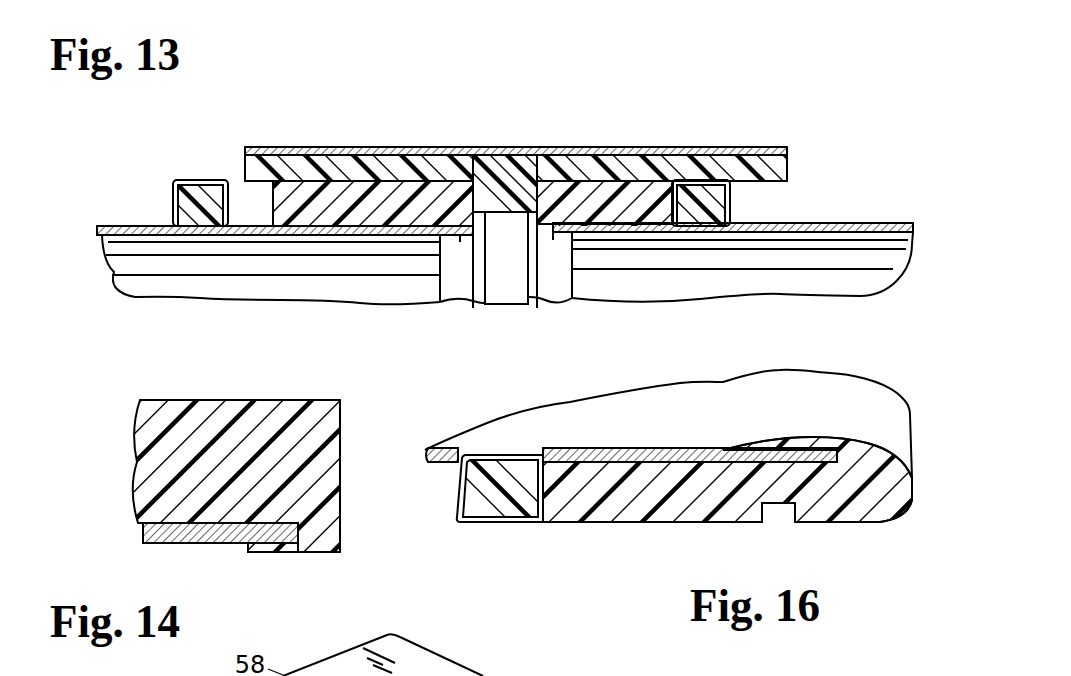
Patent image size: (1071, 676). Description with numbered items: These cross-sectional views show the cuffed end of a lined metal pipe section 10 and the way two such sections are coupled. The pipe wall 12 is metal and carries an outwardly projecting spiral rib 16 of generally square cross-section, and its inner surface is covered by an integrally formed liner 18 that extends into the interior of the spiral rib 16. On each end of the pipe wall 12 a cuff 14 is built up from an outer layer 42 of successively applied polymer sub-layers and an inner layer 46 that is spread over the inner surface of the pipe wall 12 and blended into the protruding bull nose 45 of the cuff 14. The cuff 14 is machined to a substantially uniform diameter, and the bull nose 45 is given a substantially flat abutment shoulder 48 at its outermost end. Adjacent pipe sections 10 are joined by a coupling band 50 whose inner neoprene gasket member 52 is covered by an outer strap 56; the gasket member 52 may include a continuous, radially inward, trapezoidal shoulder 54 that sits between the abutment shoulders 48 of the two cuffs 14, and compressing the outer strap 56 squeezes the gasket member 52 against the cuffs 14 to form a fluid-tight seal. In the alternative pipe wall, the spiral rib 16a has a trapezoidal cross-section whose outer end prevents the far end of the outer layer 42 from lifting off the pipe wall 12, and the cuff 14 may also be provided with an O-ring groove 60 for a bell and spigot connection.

In FIG. 13, the pipe section 10 is at (158, 175).
In FIG. 13, the pipe wall 12 is at (126, 224).
In FIG. 14, the pipe wall 12 is at (143, 527).
In FIG. 16, the pipe wall 12 is at (450, 455).
In FIG. 13, the cuff 14 is at (400, 147).
In FIG. 13, the spiral rib 16 is at (205, 177).
In FIG. 16, the spiral rib 16a is at (497, 528).
In FIG. 13, the liner 18 is at (195, 235).
In FIG. 14, the liner 18 is at (184, 545).
In FIG. 16, the liner 18 is at (612, 450).
In FIG. 13, the outer layer 42 is at (452, 185).
In FIG. 14, the outer layer 42 is at (270, 414).
In FIG. 16, the outer layer 42 is at (575, 522).
In FIG. 14, the bull nose 45 is at (350, 554).
In FIG. 16, the bull nose 45 is at (915, 512).
In FIG. 13, the inner layer 46 is at (457, 255).
In FIG. 14, the inner layer 46 is at (280, 553).
In FIG. 16, the inner layer 46 is at (805, 437).
In FIG. 14, the abutment shoulder 48 is at (340, 462).
In FIG. 13, the coupling band 50 is at (563, 144).
In FIG. 13, the gasket member 52 is at (305, 147).
In FIG. 13, the shoulder 54 is at (514, 175).
In FIG. 13, the outer strap 56 is at (745, 147).
In FIG. 16, the O-ring groove 60 is at (772, 522).